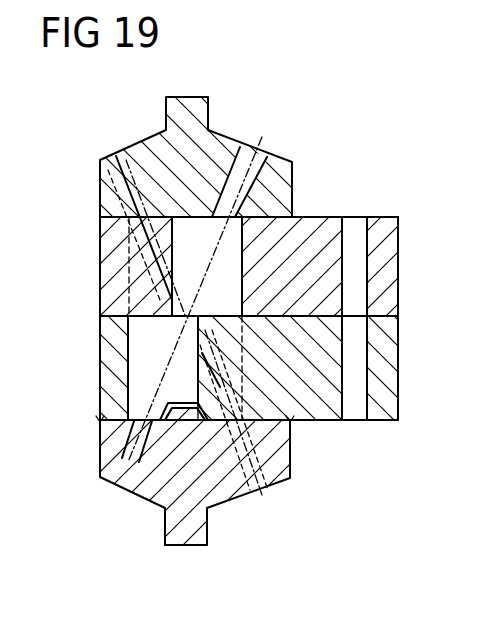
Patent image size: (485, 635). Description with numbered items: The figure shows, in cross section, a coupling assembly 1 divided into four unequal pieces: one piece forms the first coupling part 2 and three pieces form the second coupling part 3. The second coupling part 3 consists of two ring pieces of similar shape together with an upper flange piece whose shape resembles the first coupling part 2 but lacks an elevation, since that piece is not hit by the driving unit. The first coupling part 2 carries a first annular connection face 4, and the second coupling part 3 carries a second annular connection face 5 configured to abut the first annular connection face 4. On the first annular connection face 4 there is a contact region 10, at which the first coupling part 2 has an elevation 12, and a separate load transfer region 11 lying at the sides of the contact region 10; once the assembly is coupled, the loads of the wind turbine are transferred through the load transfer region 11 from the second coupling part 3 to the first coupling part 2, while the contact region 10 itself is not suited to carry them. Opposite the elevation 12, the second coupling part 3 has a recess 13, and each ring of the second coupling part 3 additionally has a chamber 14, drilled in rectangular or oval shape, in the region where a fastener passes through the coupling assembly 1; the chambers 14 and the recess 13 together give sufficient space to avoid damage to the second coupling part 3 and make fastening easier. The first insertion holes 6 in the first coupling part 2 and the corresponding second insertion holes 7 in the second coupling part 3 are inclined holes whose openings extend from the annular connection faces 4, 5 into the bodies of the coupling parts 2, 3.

The coupling assembly 1 is at (335, 117).
The first coupling part 2 is at (294, 550).
The second coupling part 3 is at (374, 179).
The first annular connection face 4 is at (106, 427).
The second annular connection face 5 is at (112, 420).
The first insertion holes 6 is at (120, 440).
The second insertion holes 7 is at (262, 137).
The contact region 10 is at (100, 358).
The load transfer region 11 is at (112, 423).
The elevation 12 is at (185, 418).
The recess 13 is at (100, 358).
The chamber 14 is at (182, 222).